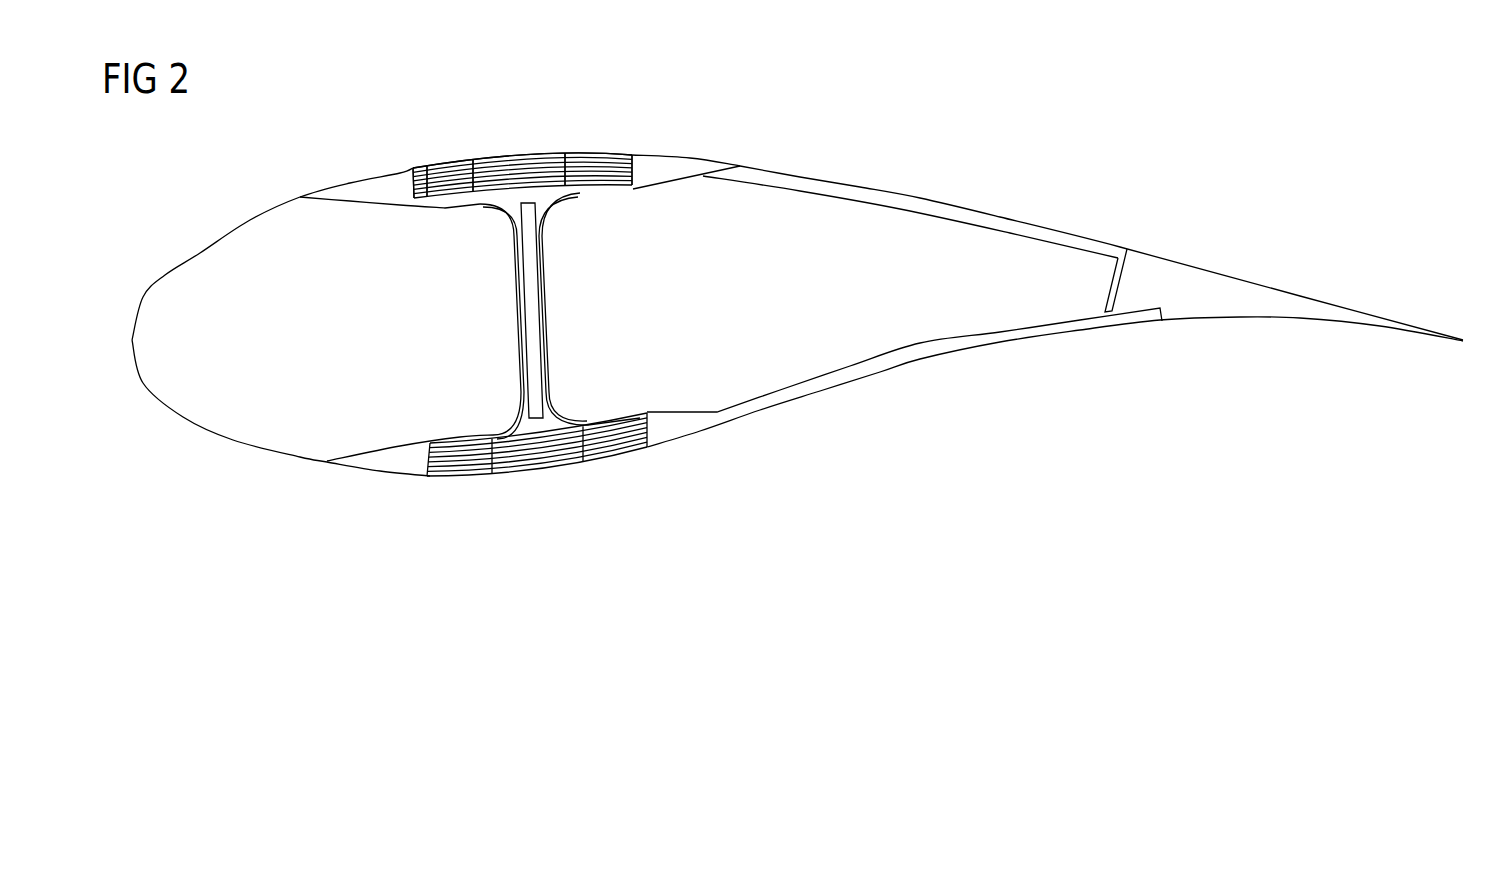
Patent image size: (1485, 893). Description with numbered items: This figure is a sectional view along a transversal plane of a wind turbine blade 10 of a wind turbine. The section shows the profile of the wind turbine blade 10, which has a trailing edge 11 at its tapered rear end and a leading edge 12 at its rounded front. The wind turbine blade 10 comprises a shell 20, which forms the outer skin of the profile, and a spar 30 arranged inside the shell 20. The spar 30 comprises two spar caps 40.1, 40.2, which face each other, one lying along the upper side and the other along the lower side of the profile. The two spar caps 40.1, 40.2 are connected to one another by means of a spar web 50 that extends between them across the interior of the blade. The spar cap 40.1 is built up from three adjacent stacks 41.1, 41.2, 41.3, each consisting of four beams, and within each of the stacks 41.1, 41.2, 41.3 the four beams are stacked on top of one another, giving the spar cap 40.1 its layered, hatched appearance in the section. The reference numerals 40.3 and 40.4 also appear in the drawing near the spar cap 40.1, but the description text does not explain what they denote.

The wind turbine blade 10 is at (997, 390).
The trailing edge 11 is at (1441, 316).
The leading edge 12 is at (116, 343).
The shell 20 is at (967, 208).
The spar 30 is at (701, 140).
The spar cap 40.1 is at (440, 172).
The spar cap 40.2 is at (468, 496).
The third fibre layer 40.3 is at (428, 176).
The fourth fibre layer 40.4 is at (432, 203).
The stack 41.1 is at (463, 165).
The stack 41.2 is at (520, 158).
The stack 41.3 is at (598, 158).
The spar web 50 is at (518, 313).